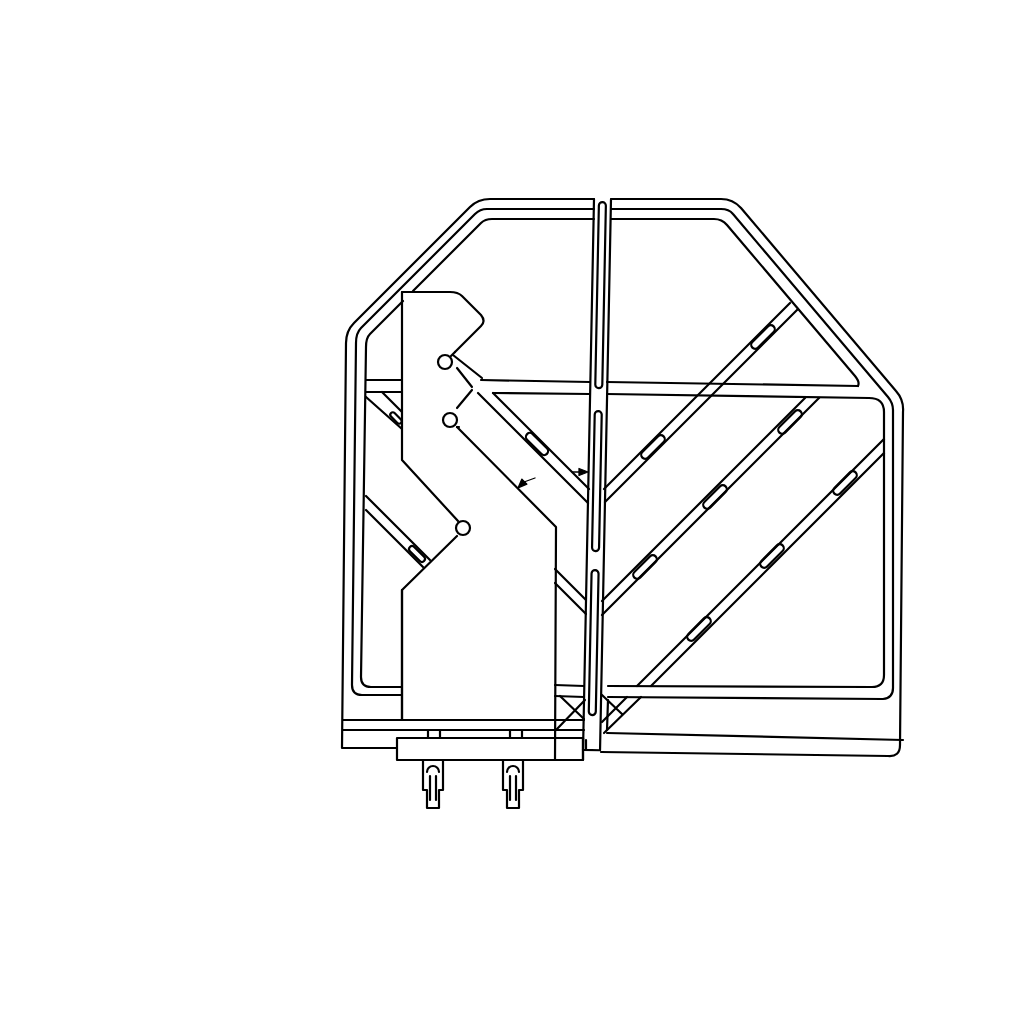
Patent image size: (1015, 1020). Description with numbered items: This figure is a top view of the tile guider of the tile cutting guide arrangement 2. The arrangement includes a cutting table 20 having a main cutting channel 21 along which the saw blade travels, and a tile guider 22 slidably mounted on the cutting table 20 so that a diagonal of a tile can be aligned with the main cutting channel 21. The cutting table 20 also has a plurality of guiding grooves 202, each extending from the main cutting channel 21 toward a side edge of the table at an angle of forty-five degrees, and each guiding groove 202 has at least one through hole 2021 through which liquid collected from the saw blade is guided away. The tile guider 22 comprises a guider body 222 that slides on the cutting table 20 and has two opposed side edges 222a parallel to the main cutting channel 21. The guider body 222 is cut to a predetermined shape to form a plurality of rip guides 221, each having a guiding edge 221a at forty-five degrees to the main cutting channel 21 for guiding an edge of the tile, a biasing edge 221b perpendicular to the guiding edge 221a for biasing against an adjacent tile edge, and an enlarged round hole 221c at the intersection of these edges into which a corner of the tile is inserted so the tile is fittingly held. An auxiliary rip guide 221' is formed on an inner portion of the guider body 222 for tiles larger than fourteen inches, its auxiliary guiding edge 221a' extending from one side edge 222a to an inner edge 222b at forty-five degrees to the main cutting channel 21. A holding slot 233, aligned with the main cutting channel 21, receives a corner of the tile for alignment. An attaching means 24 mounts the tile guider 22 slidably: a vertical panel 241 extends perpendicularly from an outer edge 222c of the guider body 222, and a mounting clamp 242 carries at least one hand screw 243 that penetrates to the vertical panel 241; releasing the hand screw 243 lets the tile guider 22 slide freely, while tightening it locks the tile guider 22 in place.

The tile cutting guide arrangement 2 is at (895, 137).
The cutting table 20 is at (898, 608).
The main cutting channel 21 is at (606, 380).
The tile guider 22 is at (93, 384).
The attaching means 24 is at (387, 847).
The guiding groove 202 is at (862, 470).
The through hole 2021 is at (790, 420).
The rip guide 221 is at (396, 343).
The auxiliary rip guide 221' is at (388, 248).
The guiding edge 221a is at (458, 394).
The auxiliary guiding edge 221a' is at (428, 273).
The biasing edge 221b is at (452, 354).
The round hole 221c is at (451, 357).
The guider body 222 is at (417, 640).
The side edge 222a is at (398, 672).
The inner edge 222b is at (430, 290).
The outer edge 222c is at (397, 717).
The holding slot 233 is at (590, 760).
The vertical panel 241 is at (535, 730).
The mounting clamp 242 is at (410, 753).
The hand screw 243 is at (503, 785).